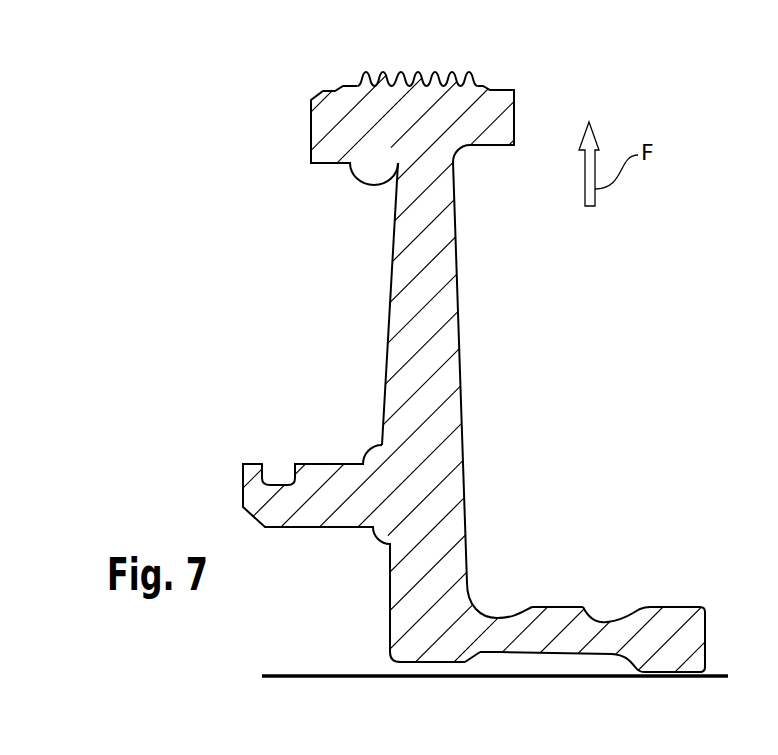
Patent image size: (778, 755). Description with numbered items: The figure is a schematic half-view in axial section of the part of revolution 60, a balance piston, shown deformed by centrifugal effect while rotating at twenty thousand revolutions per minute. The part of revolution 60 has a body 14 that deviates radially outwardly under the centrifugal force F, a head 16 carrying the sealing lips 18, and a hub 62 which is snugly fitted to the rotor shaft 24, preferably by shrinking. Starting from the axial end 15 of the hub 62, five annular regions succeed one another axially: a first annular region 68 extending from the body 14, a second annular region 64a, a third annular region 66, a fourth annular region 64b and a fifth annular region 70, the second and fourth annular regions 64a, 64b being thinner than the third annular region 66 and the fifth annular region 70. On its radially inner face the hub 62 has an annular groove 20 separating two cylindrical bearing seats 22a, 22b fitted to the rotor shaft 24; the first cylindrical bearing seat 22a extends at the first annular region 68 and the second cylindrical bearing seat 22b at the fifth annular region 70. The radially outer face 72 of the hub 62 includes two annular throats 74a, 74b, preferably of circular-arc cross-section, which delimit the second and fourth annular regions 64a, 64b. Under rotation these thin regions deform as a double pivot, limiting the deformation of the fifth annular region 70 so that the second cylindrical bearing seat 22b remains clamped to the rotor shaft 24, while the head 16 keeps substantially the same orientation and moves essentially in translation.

The body 14 is at (425, 285).
The axial end of the hub 15 is at (388, 620).
The head 16 is at (360, 125).
The sealing lips 18 is at (418, 72).
The annular groove 20 is at (518, 653).
The first cylindrical bearing seat 22a is at (435, 663).
The second cylindrical bearing seat 22b is at (668, 678).
The rotor shaft 24 is at (310, 674).
The part of revolution 60 is at (522, 313).
The hub 62 is at (690, 607).
The second annular region 64a is at (497, 630).
The fourth annular region 64b is at (618, 638).
The third annular region 66 is at (560, 633).
The first annular region 68 is at (420, 630).
The fifth annular region 70 is at (690, 652).
The radially outer face 72 is at (668, 608).
The first annular throat 74a is at (505, 617).
The second annular throat 74b is at (623, 622).